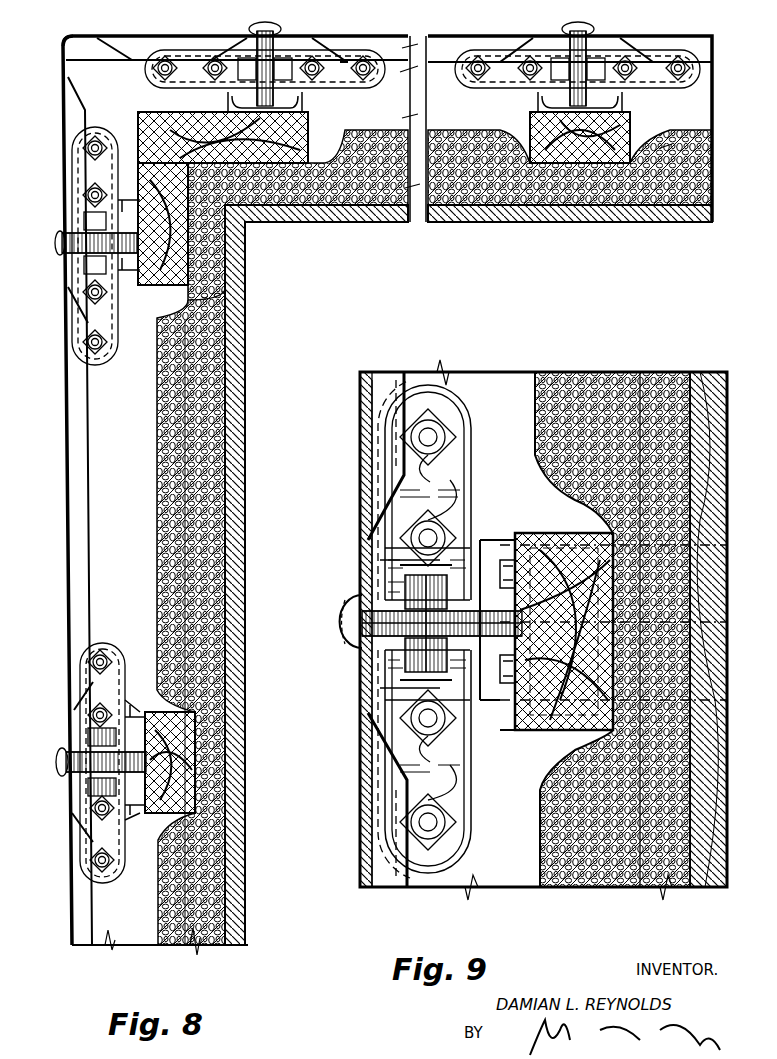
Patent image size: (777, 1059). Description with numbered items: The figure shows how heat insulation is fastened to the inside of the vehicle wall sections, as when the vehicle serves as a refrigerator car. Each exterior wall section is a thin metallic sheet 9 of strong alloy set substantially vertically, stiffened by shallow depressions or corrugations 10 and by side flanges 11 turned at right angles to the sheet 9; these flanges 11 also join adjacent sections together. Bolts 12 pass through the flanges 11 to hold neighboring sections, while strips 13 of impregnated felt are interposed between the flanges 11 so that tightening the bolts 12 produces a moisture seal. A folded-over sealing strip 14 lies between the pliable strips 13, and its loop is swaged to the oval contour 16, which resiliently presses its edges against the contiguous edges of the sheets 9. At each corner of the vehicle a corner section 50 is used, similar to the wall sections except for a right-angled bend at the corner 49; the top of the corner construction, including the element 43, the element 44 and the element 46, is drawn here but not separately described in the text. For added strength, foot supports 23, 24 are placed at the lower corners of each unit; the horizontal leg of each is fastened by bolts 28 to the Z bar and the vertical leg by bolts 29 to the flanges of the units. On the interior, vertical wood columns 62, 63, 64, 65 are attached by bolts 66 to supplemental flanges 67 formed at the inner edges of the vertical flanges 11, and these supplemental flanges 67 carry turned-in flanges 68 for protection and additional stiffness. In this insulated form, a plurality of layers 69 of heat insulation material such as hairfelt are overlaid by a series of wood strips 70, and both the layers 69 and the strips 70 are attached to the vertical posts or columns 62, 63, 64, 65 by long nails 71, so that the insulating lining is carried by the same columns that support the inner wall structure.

In FIG. 8, the thin metallic sheet 9 is at (66, 430).
In FIG. 8, the depressions or corrugations 10 is at (82, 476).
In FIG. 9, the side flanges 11 is at (382, 585).
In FIG. 9, the bolts 12 is at (430, 645).
In FIG. 8, the strips of impregnated felt 13 is at (82, 742).
In FIG. 9, the strips of impregnated felt 13 is at (372, 620).
In FIG. 8, the sealing strip 14 is at (258, 38).
In FIG. 9, the sealing strip 14 is at (420, 636).
In FIG. 8, the flattened oval portion 16 is at (56, 762).
In FIG. 9, the flattened oval portion 16 is at (345, 622).
In FIG. 8, the foot support 23 is at (118, 836).
In FIG. 9, the foot support 23 is at (478, 815).
In FIG. 8, the foot support 24 is at (100, 682).
In FIG. 9, the foot support 24 is at (470, 440).
In FIG. 9, the bolts 28 is at (437, 627).
In FIG. 8, the bolts 29 is at (88, 222).
In FIG. 9, the bolts 29 is at (400, 556).
In FIG. 8, the top clip 43 is at (330, 38).
In FIG. 8, the clip member 44 is at (305, 105).
In FIG. 8, the panel section 46 is at (445, 45).
In FIG. 8, the corner 49 is at (115, 38).
In FIG. 8, the corner section 50 is at (68, 36).
In FIG. 8, the vertical wood column 62 is at (150, 712).
In FIG. 9, the vertical wood column 62 is at (528, 535).
In FIG. 8, the vertical wood column 63 is at (148, 288).
In FIG. 8, the vertical wood column 64 is at (136, 112).
In FIG. 8, the vertical wood column 65 is at (530, 128).
In FIG. 9, the bolts 66 is at (552, 545).
In FIG. 8, the supplemental flanges 67 is at (138, 717).
In FIG. 9, the supplemental flanges 67 is at (497, 556).
In FIG. 8, the turned-in flanges 68 is at (95, 662).
In FIG. 9, the turned-in flanges 68 is at (480, 540).
In FIG. 8, the layers of heat insulation material 69 is at (210, 380).
In FIG. 9, the layers of heat insulation material 69 is at (640, 372).
In FIG. 8, the wood strips 70 is at (236, 450).
In FIG. 9, the wood strips 70 is at (736, 362).
In FIG. 9, the long nails 71 is at (728, 545).